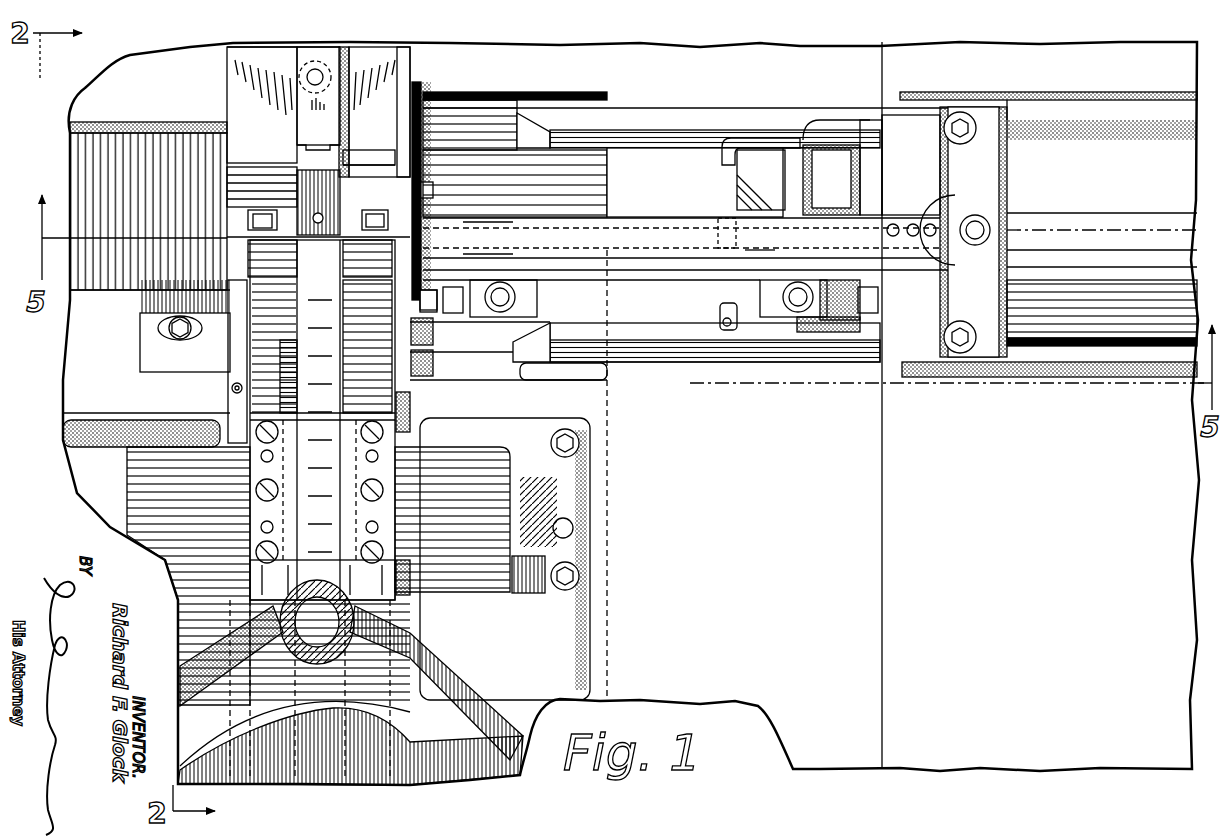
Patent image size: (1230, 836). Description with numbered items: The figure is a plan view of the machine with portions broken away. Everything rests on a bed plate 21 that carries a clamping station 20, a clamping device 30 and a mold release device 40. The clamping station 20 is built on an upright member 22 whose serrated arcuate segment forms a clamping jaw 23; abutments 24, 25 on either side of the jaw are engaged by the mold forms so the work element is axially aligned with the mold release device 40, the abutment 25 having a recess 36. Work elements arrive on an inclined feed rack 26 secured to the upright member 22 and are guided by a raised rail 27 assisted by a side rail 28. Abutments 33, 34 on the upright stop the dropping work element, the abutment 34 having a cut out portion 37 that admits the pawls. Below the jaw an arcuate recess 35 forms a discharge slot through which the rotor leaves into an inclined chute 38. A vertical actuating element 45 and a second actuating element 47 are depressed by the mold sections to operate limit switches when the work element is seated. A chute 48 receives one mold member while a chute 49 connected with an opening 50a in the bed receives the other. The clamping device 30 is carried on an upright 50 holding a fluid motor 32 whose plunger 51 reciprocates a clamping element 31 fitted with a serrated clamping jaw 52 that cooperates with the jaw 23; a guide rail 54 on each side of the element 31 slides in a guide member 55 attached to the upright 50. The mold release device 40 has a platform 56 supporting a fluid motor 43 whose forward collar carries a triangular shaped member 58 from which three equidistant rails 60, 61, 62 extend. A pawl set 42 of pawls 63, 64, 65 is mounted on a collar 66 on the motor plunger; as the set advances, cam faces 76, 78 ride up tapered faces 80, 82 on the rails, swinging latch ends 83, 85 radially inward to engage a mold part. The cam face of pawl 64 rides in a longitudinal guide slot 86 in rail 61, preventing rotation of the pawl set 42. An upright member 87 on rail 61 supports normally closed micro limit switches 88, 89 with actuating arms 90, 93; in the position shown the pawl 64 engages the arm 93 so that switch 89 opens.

The clamping station 20 is at (294, 155).
The bed plate 21 is at (742, 700).
The upright member 22 is at (227, 95).
The clamping jaw 23 is at (332, 180).
The abutment 24 is at (245, 180).
The abutment 25 is at (420, 175).
The inclined feed rack 26 is at (232, 48).
The raised rail 27 is at (338, 48).
The side rail 28 is at (400, 47).
The clamping device 30 is at (432, 623).
The clamping element 31 is at (300, 395).
The fluid motor 32 is at (310, 763).
The abutment 33 is at (210, 350).
The abutment 34 is at (410, 330).
The arcuate recess 35 is at (410, 361).
The recess 36 is at (424, 188).
The cut out portion 37 is at (395, 282).
The inclined chute 38 is at (233, 375).
The mold release device 40 is at (744, 104).
The pawl set 42 is at (720, 171).
The fluid motor 43 is at (1085, 130).
The vertical actuating element 45 is at (254, 226).
The actuating element 47 is at (390, 222).
The chute 48 is at (152, 130).
The chute 49 is at (575, 176).
The upright 50 is at (545, 558).
The opening 50a is at (541, 95).
The plunger 51 is at (352, 612).
The clamping jaw 52 is at (300, 267).
The guide rail 54 is at (410, 398).
The guide member 55 is at (412, 438).
The platform 56 is at (1049, 366).
The triangular shaped member 58 is at (905, 133).
The rail 60 is at (665, 115).
The rail 61 is at (652, 228).
The rail 62 is at (700, 350).
The pawl 63 is at (724, 217).
The pawl 64 is at (757, 235).
The pawl 65 is at (720, 312).
The collar 66 is at (812, 148).
The cam face 76 is at (861, 125).
The cam face 78 is at (845, 335).
The tapered face 80 is at (536, 125).
The tapered face 82 is at (520, 358).
The latch end 83 is at (742, 157).
The latch end 85 is at (730, 328).
The guide slot 86 is at (640, 246).
The upright member 87 is at (720, 248).
The micro limit switch 88 is at (537, 300).
The micro limit switch 89 is at (765, 290).
The actuating arm 90 is at (432, 298).
The actuating arm 93 is at (868, 315).